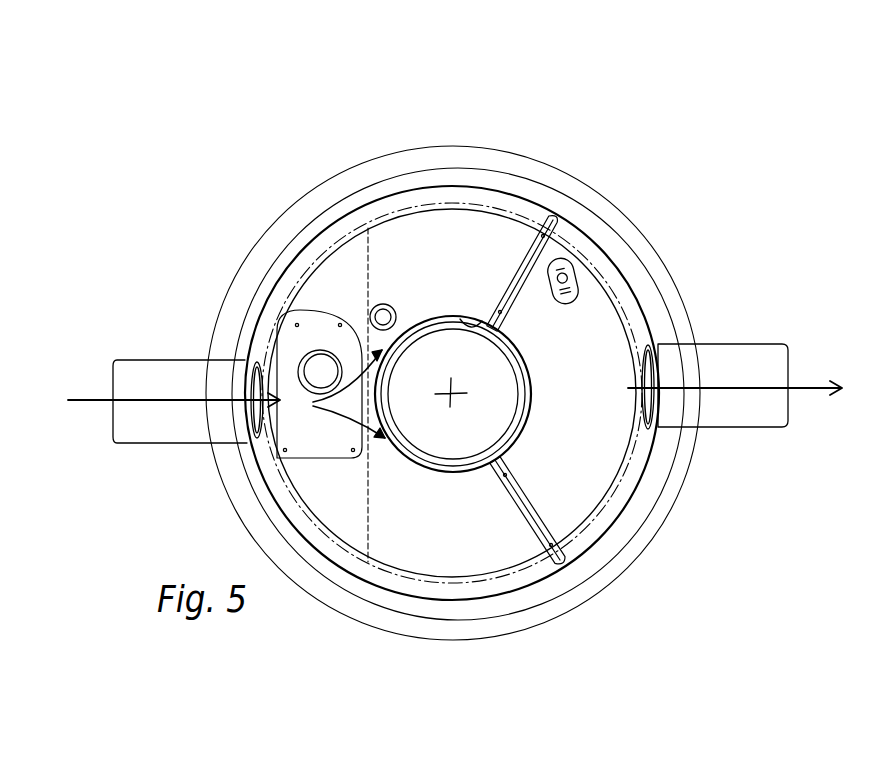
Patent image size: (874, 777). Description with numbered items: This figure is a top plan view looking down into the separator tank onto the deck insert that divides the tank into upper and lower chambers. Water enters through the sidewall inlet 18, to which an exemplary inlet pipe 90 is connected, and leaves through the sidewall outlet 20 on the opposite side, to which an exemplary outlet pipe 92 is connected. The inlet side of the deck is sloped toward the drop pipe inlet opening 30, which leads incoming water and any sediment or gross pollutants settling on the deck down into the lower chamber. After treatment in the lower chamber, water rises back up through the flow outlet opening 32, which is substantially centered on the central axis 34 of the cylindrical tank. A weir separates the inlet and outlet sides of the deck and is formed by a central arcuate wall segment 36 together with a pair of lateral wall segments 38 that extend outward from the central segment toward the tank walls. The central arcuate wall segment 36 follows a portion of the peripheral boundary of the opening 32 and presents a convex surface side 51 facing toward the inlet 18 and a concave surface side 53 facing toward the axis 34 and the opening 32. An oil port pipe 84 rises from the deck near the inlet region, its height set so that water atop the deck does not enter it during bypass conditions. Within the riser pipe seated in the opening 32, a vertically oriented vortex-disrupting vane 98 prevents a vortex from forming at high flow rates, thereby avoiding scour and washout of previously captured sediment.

The sidewall inlet 18 is at (266, 428).
The sidewall outlet 20 is at (642, 430).
The opening 30 is at (313, 369).
The opening 32 is at (495, 373).
The central axis 34 is at (450, 394).
The central arcuate wall segment 36 is at (460, 470).
The lateral wall segments 38 is at (537, 253).
The convex surface side 51 is at (393, 447).
The concave surface side 53 is at (460, 318).
The oil port pipe 84 is at (385, 304).
The inlet pipe 90 is at (152, 361).
The outlet pipe 92 is at (747, 342).
The vortex-disrupting vane 98 is at (515, 391).